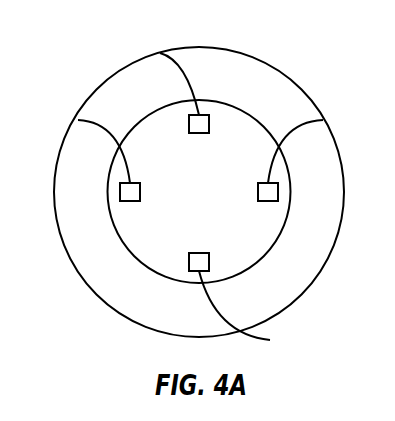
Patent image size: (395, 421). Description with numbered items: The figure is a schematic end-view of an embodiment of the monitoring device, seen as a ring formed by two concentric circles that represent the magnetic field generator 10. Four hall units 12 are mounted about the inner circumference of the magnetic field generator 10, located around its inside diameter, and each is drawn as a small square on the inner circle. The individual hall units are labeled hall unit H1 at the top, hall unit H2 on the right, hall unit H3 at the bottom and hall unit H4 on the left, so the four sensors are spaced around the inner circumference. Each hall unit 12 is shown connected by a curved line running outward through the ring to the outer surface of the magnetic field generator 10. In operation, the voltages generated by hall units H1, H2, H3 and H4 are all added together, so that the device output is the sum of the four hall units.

The magnetic field generator 10 is at (213, 48).
The hall units 12 is at (160, 53).
The hall unit H1 is at (181, 134).
The hall unit H2 is at (256, 171).
The hall unit H3 is at (215, 253).
The hall unit H4 is at (135, 214).